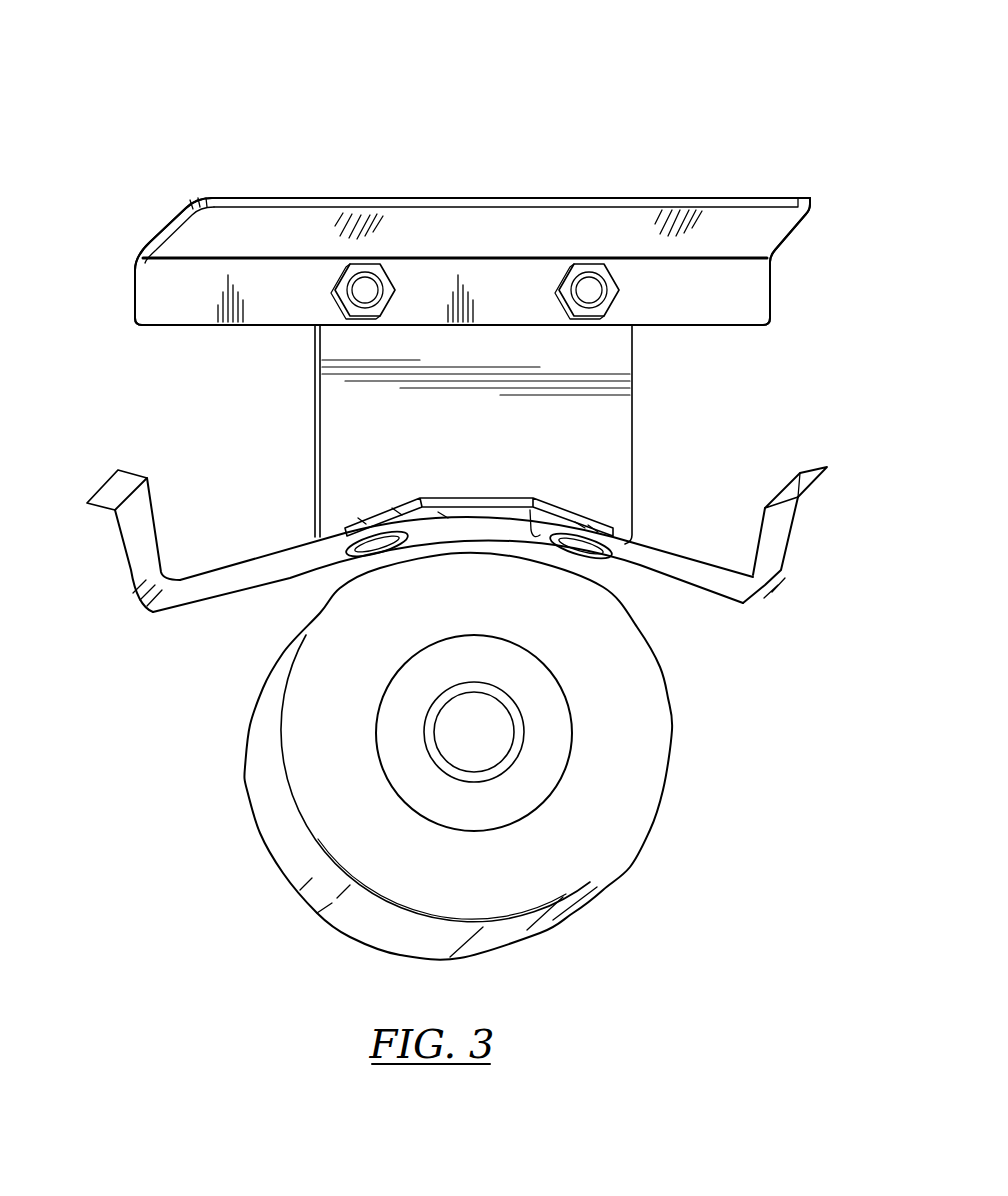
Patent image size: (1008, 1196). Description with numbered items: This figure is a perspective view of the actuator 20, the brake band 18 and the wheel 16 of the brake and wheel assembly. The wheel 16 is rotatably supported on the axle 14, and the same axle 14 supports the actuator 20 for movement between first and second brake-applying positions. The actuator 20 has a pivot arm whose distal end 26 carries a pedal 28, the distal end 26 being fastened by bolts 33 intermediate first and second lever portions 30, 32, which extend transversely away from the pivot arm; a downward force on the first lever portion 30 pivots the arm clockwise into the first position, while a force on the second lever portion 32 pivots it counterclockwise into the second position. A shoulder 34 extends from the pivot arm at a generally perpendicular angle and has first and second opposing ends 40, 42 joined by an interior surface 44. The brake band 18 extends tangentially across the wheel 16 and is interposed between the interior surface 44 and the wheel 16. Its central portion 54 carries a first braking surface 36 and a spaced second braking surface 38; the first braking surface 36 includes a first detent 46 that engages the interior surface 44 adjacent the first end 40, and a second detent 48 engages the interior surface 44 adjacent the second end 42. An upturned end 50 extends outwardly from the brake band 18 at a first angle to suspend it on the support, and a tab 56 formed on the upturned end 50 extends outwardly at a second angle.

The axle 14 is at (472, 774).
The wheel 16 is at (247, 783).
The brake band 18 is at (665, 590).
The actuator 20 is at (322, 198).
The distal end 26 is at (633, 358).
The pedal 28 is at (470, 198).
The first lever portion 30 is at (738, 198).
The second lever portion 32 is at (236, 198).
The bolts 33 is at (392, 264).
The shoulder 34 is at (485, 497).
The first braking surface 36 is at (612, 538).
The second braking surface 38 is at (342, 540).
The first end 40 is at (592, 527).
The second end 42 is at (400, 515).
The interior surface 44 is at (545, 520).
The first detent 46 is at (583, 527).
The second detent 48 is at (363, 522).
The upturned end 50 is at (124, 552).
The central portion 54 is at (443, 517).
The tab 56 is at (100, 487).